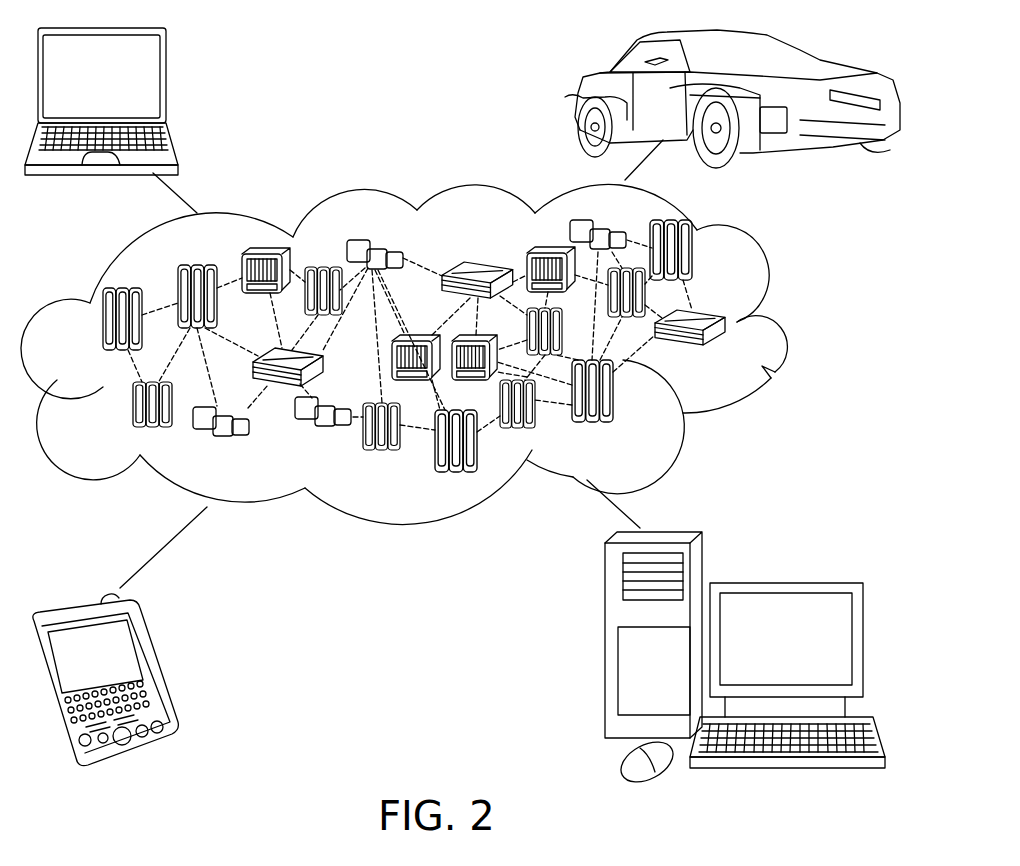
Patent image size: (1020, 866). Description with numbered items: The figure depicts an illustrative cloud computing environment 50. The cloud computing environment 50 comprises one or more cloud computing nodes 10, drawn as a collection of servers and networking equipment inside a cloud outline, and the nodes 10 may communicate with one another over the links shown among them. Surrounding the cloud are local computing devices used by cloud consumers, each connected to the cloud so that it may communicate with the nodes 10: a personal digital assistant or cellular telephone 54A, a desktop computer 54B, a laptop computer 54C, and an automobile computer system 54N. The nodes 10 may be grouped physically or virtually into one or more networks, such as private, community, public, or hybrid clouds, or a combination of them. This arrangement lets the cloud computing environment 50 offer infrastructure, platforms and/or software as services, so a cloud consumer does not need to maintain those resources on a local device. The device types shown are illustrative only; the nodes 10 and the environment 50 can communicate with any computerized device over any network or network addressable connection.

The cloud computing node 10 is at (735, 354).
The cloud computing environment 50 is at (780, 327).
The personal digital assistant or cellular telephone 54A is at (160, 665).
The desktop computer 54B is at (782, 582).
The laptop computer 54C is at (168, 82).
The automobile computer system 54N is at (577, 98).